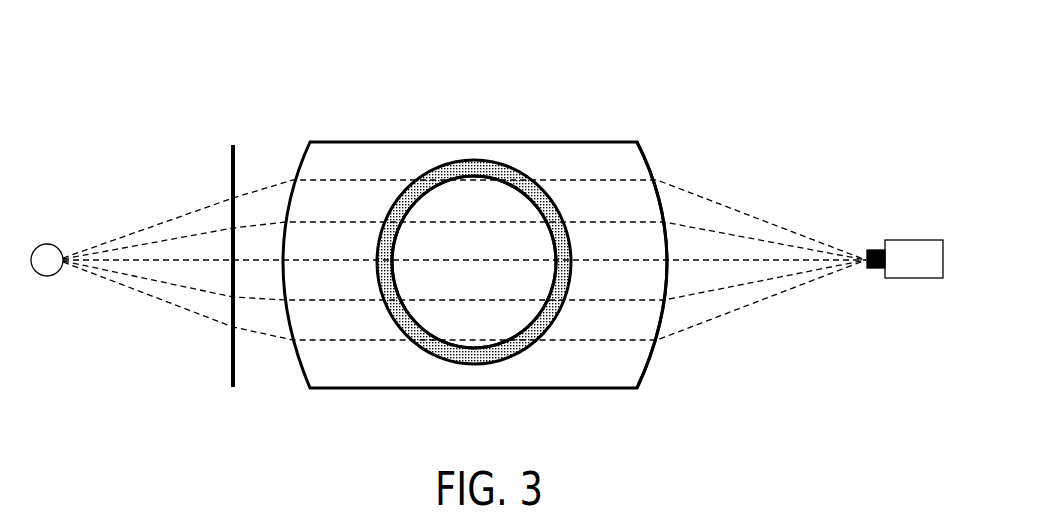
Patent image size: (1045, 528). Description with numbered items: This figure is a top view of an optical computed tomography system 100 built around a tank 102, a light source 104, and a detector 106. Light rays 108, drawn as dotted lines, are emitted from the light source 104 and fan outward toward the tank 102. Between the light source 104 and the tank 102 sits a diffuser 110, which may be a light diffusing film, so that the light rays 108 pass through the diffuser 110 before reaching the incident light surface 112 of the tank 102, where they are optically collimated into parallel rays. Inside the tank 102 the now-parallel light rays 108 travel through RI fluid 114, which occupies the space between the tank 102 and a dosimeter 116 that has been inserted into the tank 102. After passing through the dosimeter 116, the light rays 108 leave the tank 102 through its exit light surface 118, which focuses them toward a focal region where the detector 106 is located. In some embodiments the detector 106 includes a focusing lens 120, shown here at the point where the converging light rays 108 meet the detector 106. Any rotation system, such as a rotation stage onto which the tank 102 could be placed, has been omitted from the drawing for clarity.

The optical computed tomography system 100 is at (256, 40).
The tank 102 is at (623, 365).
The light source 104 is at (47, 256).
The detector 106 is at (913, 270).
The light rays 108 is at (173, 283).
The diffuser 110 is at (233, 368).
The incident light surface 112 is at (303, 158).
The RI fluid 114 is at (478, 166).
The dosimeter 116 is at (472, 280).
The exit light surface 118 is at (647, 162).
The focusing lens 120 is at (870, 247).